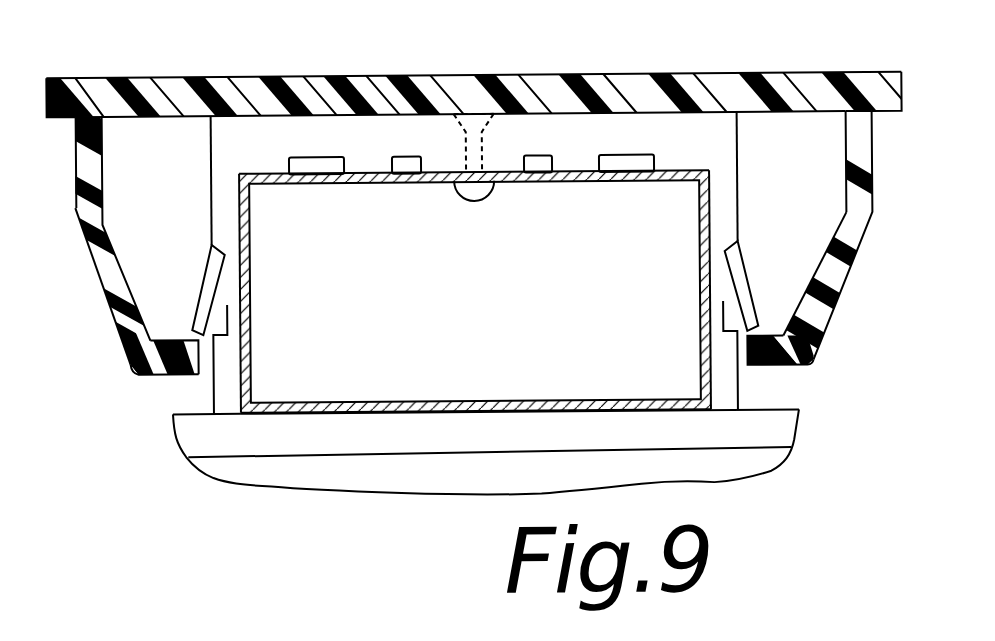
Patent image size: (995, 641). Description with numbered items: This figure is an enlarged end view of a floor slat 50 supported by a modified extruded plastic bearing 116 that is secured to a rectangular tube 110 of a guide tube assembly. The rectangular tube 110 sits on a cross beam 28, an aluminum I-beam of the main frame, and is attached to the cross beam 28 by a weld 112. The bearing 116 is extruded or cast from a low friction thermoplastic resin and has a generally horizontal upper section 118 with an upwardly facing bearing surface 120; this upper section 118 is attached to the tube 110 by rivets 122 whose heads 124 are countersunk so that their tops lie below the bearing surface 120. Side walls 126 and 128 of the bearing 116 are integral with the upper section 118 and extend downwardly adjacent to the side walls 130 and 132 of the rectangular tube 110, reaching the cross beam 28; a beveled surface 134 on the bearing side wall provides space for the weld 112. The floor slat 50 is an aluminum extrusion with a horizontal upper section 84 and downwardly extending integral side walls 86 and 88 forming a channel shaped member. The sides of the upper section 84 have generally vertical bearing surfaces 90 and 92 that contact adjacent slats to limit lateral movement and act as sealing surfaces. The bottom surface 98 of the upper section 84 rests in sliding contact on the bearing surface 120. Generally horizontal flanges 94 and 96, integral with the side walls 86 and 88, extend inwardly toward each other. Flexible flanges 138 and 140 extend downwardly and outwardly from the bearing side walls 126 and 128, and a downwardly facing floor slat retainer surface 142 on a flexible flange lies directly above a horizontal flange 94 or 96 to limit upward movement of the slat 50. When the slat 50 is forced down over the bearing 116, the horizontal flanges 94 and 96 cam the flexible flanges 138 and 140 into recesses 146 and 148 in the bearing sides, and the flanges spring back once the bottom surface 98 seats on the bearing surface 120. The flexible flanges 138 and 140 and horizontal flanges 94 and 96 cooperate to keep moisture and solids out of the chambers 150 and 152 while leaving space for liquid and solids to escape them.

The cross beam 28 is at (322, 468).
The floor slat 50 is at (724, 70).
The horizontal upper section 84 is at (312, 80).
The side wall 86 is at (180, 264).
The side wall 88 is at (774, 244).
The vertical bearing surface 90 is at (49, 74).
The vertical bearing surface 92 is at (904, 76).
The horizontal flange 94 is at (198, 353).
The horizontal flange 96 is at (747, 351).
The bottom surface 98 is at (822, 114).
The rectangular tube 110 is at (475, 283).
The weld 112 is at (164, 411).
The bearing 116 is at (728, 163).
The horizontal upper section 118 is at (418, 125).
The upwardly facing bearing surface 120 is at (617, 113).
The rivet 122 is at (466, 187).
The head 124 is at (463, 114).
The side wall 126 is at (176, 133).
The side wall 128 is at (770, 176).
The side wall 130 is at (250, 265).
The side wall 132 is at (703, 251).
The beveled surface 134 is at (139, 383).
The flexible flange 138 is at (200, 297).
The flexible flange 140 is at (748, 301).
The downwardly facing floor slat retainer surface 142 is at (182, 334).
The recess 146 is at (227, 306).
The recess 148 is at (725, 306).
The chamber 150 is at (172, 134).
The chamber 152 is at (820, 210).